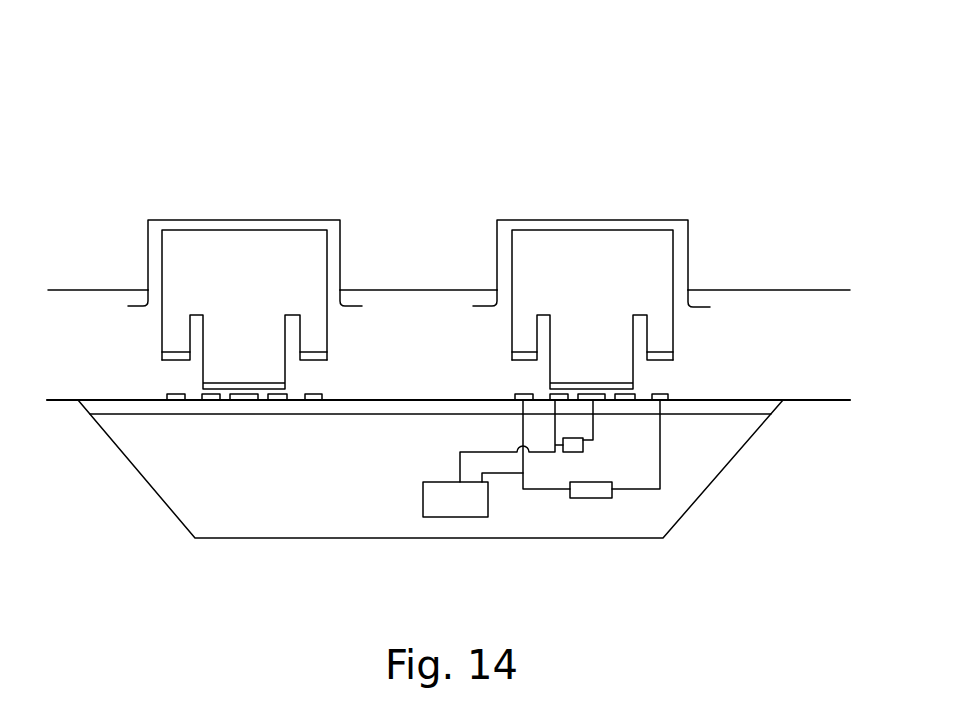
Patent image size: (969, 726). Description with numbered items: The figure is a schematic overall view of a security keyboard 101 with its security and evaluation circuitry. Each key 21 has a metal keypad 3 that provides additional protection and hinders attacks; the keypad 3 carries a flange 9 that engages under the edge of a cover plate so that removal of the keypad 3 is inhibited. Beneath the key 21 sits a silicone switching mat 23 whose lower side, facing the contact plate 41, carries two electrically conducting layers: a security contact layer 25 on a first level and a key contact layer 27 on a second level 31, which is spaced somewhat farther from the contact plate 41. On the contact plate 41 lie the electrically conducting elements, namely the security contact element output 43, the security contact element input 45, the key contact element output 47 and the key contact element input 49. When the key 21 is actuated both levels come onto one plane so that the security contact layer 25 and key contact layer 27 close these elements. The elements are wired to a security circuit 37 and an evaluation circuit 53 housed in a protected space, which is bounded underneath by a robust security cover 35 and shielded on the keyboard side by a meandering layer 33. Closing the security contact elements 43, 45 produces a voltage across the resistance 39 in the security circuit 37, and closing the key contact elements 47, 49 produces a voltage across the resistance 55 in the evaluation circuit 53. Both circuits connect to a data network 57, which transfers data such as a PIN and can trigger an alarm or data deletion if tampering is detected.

The security keyboard 101 is at (578, 77).
The keypad 3 is at (675, 222).
The flange 9 is at (355, 305).
The key 21 is at (714, 232).
The switching mat 23 is at (240, 238).
The security contact layer 25 is at (287, 387).
The key contact layer 27 is at (157, 353).
The second level 31 is at (167, 323).
The meandering layer 33 is at (755, 410).
The security cover 35 is at (723, 472).
The security circuit 37 is at (604, 433).
The resistance 39 is at (572, 453).
The contact plate 41 is at (820, 400).
The security contact element output 43 is at (248, 401).
The security contact element input 45 is at (278, 401).
The key contact element output 47 is at (177, 401).
The key contact element input 49 is at (315, 401).
The evaluation circuit 53 is at (675, 438).
The resistance 55 is at (592, 499).
The data network 57 is at (465, 518).